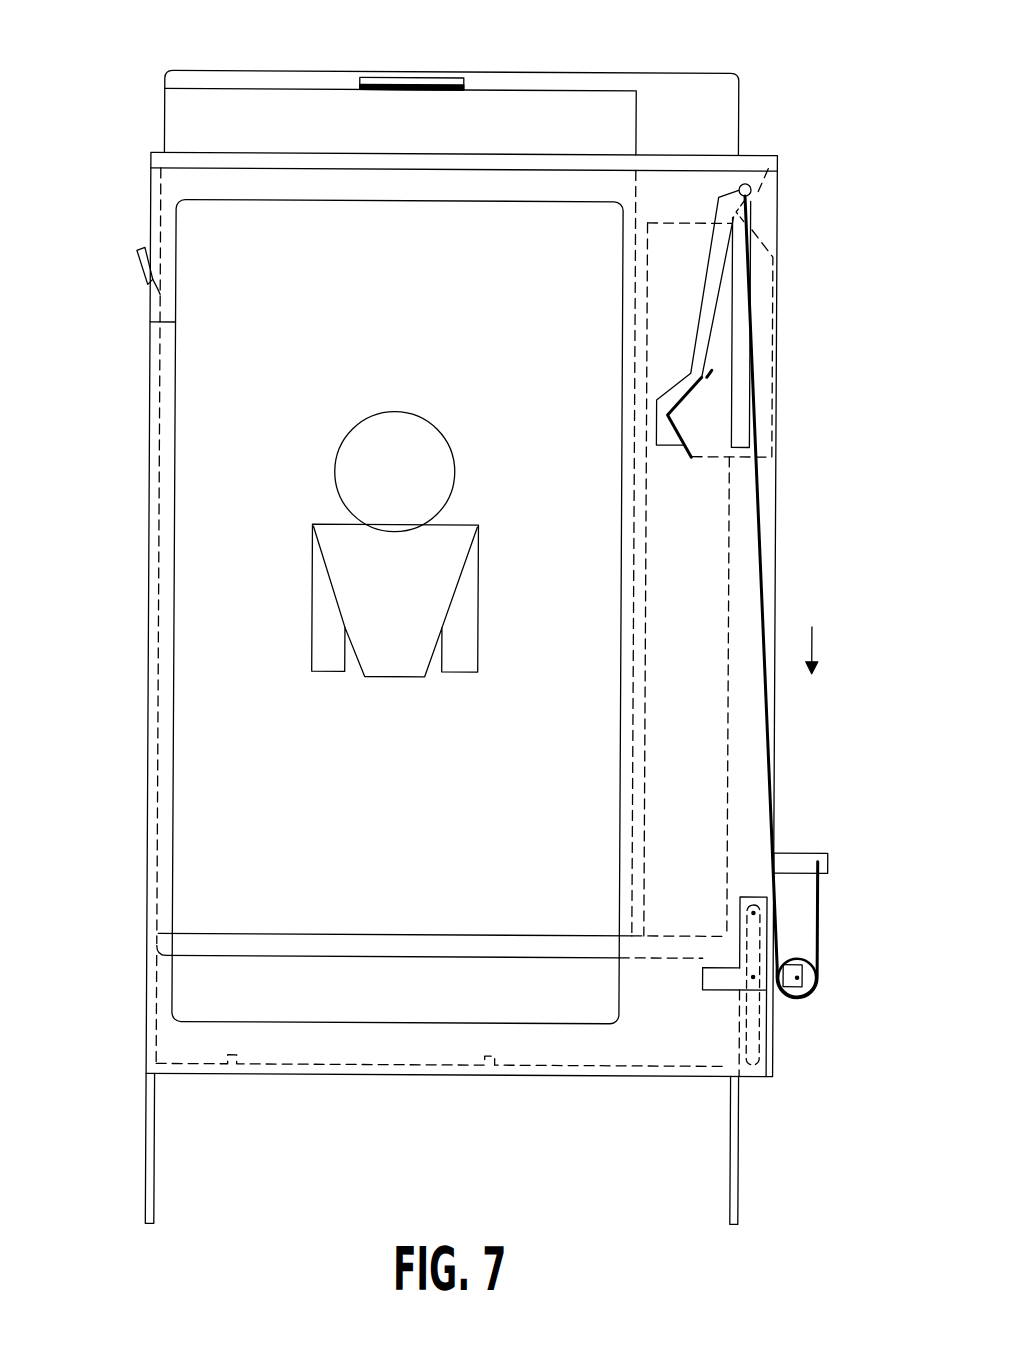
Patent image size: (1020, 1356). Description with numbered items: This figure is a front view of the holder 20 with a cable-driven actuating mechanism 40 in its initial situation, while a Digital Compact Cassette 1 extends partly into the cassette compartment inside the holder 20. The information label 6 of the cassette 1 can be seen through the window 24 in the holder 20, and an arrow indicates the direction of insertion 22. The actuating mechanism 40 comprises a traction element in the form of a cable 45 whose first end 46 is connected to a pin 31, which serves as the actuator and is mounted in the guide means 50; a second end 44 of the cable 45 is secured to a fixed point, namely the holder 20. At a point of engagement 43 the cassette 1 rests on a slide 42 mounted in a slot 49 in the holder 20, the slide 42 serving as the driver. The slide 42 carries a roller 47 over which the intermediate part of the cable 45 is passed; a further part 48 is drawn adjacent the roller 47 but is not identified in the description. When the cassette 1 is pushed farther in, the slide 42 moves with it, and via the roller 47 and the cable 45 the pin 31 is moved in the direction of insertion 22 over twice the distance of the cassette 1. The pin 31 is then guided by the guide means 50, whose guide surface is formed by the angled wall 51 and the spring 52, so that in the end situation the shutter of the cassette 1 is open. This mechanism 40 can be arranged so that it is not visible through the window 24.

The Digital Compact Cassette 1 is at (148, 72).
The information label 6 is at (226, 90).
The holder 20 is at (115, 351).
The direction of insertion 22 is at (815, 641).
The window 24 is at (508, 201).
The pin 31 is at (746, 183).
The actuating mechanism 40 is at (825, 916).
The slide 42 is at (746, 991).
The point of engagement 43 is at (710, 962).
The second end 44 is at (829, 872).
The cable 45 is at (768, 565).
The first end 46 is at (752, 197).
The roller 47 is at (808, 974).
The pulley 48 is at (802, 1000).
The slot 49 is at (768, 1055).
The guide means 50 is at (695, 317).
The wall 51 is at (700, 328).
The spring 52 is at (773, 340).